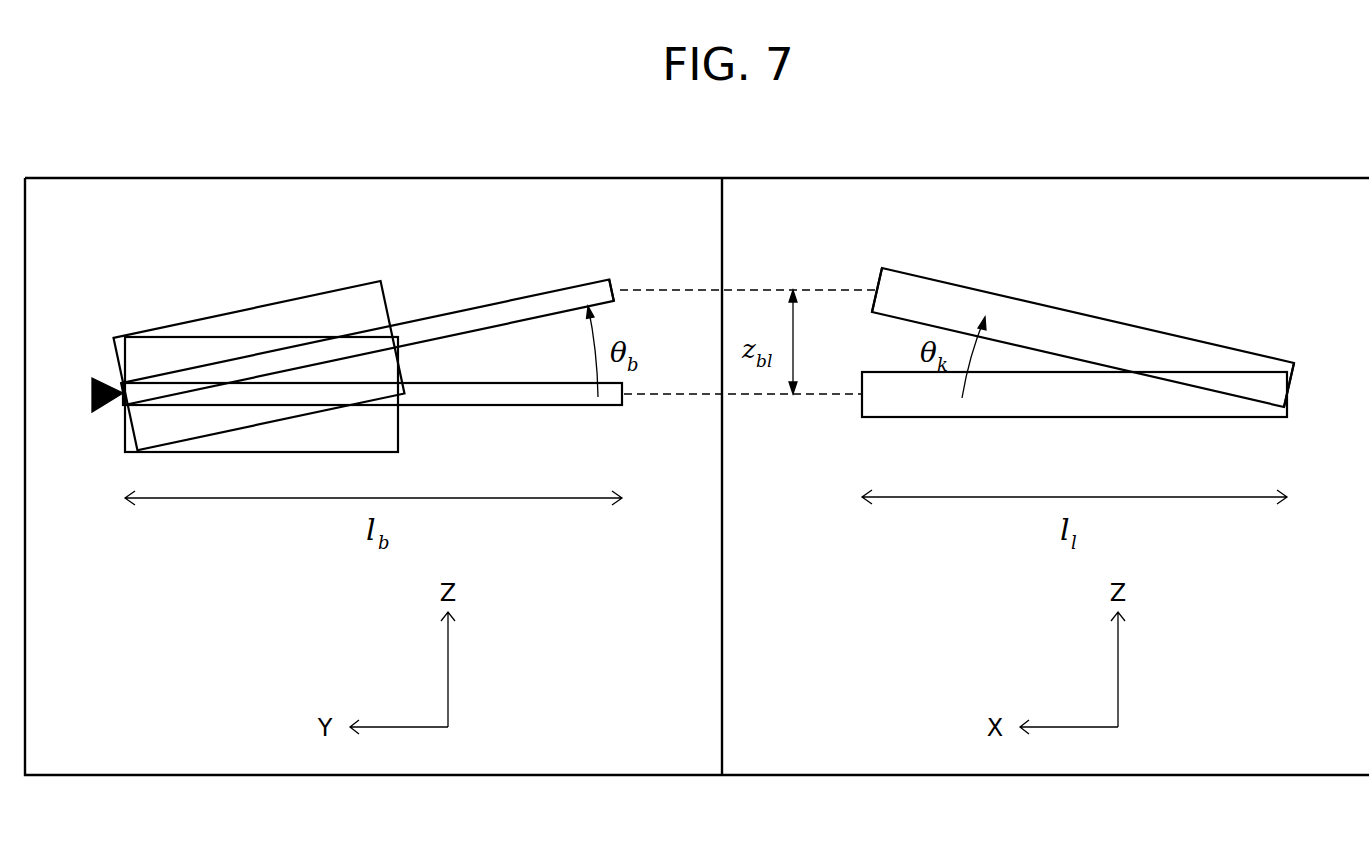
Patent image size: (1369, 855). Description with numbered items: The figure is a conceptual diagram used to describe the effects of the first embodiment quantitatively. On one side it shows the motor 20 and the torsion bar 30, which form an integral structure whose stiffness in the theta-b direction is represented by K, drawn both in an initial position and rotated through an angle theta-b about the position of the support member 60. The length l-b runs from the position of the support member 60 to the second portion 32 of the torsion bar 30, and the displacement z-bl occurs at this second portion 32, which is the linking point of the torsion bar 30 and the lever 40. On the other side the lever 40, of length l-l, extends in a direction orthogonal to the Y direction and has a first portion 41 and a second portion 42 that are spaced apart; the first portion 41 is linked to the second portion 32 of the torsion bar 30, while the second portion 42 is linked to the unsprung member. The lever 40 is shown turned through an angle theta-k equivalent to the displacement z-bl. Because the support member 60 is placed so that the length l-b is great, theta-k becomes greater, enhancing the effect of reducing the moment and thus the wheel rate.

The motor 20 is at (240, 312).
The torsion bar 30 is at (466, 309).
The second portion of torsion bar 32 is at (610, 280).
The lever 40 is at (1086, 314).
The first portion of lever 41 is at (880, 270).
The second portion of lever 42 is at (1290, 365).
The support member 60 is at (93, 413).